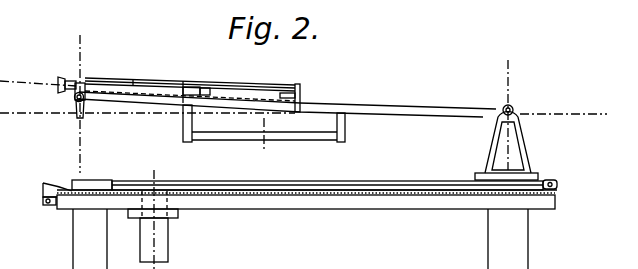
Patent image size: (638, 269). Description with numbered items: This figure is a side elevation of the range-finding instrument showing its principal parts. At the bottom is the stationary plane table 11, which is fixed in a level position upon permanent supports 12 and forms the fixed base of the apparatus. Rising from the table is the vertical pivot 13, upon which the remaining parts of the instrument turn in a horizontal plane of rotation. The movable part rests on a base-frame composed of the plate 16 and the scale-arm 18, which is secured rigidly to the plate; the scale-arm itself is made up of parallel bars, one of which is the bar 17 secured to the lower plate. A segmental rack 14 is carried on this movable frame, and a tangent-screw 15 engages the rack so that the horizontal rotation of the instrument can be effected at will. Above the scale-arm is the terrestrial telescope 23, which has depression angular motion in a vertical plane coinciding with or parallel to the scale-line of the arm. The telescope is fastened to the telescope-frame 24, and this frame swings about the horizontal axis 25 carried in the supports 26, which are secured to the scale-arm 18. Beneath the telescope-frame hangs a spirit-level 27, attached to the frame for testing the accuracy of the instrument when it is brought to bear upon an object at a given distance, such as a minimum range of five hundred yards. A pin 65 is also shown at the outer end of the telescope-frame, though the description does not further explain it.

The stationary plane table 11 is at (306, 202).
The permanent supports 12 is at (300, 239).
The vertical pivot 13 is at (153, 226).
The segmental rack 14 is at (82, 195).
The tangent-screw 15 is at (44, 201).
The plate 16 is at (70, 191).
The parallel bar 17 is at (332, 190).
The scale-arm 18 is at (330, 183).
The terrestrial telescope 23 is at (179, 91).
The telescope-frame 24 is at (328, 105).
The horizontal axis 25 is at (514, 106).
The supports 26 is at (527, 154).
The spirit-level 27 is at (224, 137).
The pin 65 is at (74, 98).